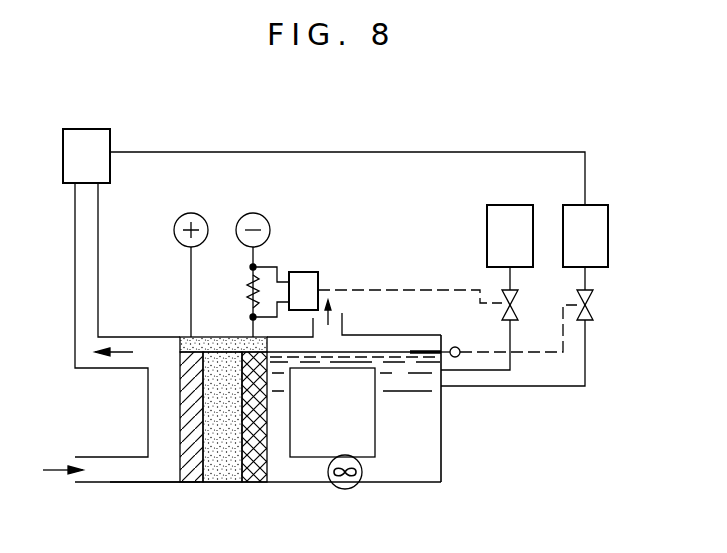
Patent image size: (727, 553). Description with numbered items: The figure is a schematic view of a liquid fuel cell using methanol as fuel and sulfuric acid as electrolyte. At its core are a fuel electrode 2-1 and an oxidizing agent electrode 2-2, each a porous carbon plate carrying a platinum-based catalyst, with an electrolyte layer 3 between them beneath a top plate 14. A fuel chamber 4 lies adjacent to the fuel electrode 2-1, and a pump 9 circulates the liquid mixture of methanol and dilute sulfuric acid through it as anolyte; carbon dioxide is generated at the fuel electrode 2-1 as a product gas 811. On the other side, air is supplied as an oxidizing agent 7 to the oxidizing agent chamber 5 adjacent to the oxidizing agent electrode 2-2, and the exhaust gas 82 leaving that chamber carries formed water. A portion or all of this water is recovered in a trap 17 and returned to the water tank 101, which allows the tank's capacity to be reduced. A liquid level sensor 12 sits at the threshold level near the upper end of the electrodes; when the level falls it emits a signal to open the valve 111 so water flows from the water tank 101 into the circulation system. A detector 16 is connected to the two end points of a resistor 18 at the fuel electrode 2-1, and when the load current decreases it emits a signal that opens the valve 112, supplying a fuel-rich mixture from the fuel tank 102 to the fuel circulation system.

The trap 17 is at (90, 129).
The exhaust gas 82 is at (120, 350).
The oxidizing agent 7 is at (56, 468).
The oxidizing agent chamber 5 is at (163, 472).
The top plate 14 is at (223, 338).
The oxidizing agent electrode 2-2 is at (191, 484).
The electrolyte layer 3 is at (226, 476).
The fuel electrode 2-1 is at (256, 486).
The fuel chamber 4 is at (287, 476).
The pump 9 is at (345, 490).
The resistor 18 is at (246, 297).
The detector 16 is at (304, 271).
The product gas 811 is at (333, 313).
The liquid level sensor 12 is at (455, 347).
The fuel tank 102 is at (487, 216).
The valve 112 is at (513, 300).
The water tank 101 is at (608, 216).
The valve 111 is at (590, 312).